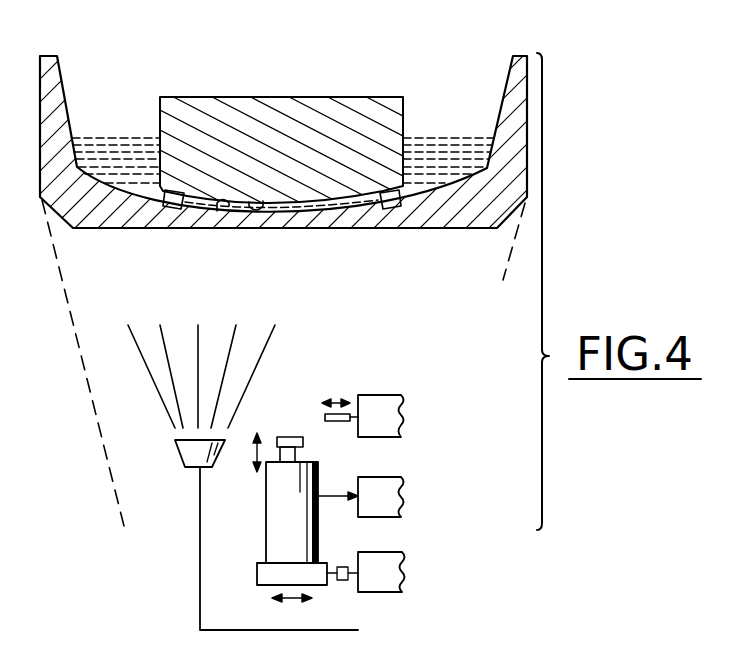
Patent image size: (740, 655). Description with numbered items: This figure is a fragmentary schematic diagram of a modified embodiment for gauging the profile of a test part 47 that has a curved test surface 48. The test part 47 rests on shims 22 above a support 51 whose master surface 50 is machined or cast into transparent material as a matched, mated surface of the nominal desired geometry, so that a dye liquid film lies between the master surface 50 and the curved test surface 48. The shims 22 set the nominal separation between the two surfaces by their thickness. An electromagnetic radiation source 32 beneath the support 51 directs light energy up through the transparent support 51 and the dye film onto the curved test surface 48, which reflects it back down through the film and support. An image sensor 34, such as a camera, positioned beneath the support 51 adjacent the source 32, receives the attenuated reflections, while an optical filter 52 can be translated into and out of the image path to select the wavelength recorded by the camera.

The shims 22 is at (163, 202).
The electromagnetic radiation source 32 is at (185, 466).
The image sensor 34 is at (269, 516).
The test part 47 is at (383, 97).
The curved test surface 48 is at (263, 201).
The master surface 50 is at (217, 211).
The support 51 is at (458, 217).
The optical filter 52 is at (325, 417).